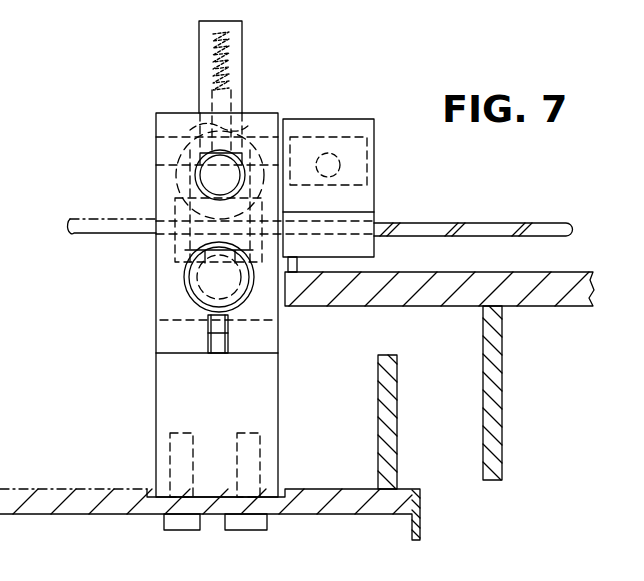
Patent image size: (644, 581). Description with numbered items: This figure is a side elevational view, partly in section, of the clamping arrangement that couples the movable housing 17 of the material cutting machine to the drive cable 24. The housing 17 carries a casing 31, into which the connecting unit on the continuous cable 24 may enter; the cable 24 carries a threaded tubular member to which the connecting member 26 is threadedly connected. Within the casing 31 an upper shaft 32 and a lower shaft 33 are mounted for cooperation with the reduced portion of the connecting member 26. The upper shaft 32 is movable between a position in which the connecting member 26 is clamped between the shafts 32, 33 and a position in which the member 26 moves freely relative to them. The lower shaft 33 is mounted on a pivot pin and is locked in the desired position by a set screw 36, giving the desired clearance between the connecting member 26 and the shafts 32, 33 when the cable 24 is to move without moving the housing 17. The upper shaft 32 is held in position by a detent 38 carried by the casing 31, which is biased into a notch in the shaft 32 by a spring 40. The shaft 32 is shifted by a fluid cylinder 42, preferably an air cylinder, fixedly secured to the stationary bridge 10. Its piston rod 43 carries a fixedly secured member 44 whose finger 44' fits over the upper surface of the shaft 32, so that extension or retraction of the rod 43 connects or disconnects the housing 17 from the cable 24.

The bridge 10 is at (580, 266).
The housing 17 is at (73, 484).
The continuous cable 24 is at (108, 218).
The connecting member 26 is at (170, 248).
The casing 31 is at (152, 406).
The upper shaft 32 is at (197, 171).
The lower shaft 33 is at (188, 289).
The set screw 36 is at (230, 331).
The detent 38 is at (249, 124).
The spring 40 is at (228, 87).
The fluid cylinder 42 is at (381, 183).
The piston rod 43 is at (368, 146).
The member 44 is at (362, 130).
The finger 44' is at (201, 107).